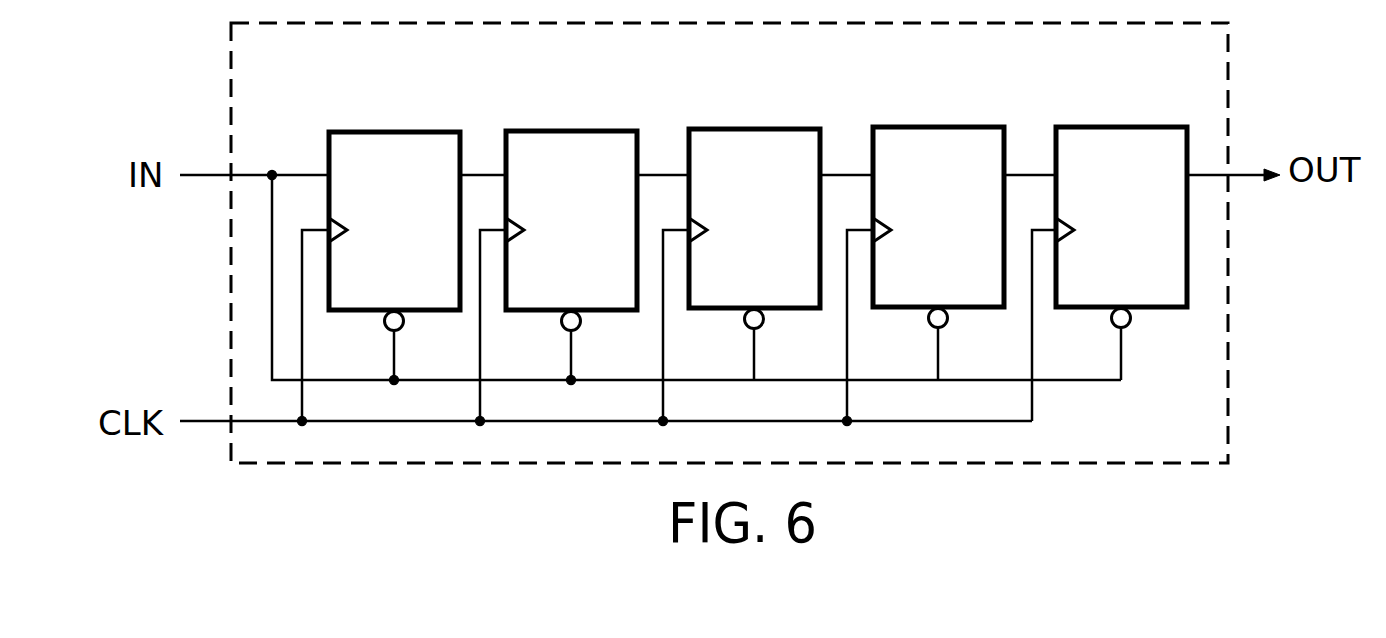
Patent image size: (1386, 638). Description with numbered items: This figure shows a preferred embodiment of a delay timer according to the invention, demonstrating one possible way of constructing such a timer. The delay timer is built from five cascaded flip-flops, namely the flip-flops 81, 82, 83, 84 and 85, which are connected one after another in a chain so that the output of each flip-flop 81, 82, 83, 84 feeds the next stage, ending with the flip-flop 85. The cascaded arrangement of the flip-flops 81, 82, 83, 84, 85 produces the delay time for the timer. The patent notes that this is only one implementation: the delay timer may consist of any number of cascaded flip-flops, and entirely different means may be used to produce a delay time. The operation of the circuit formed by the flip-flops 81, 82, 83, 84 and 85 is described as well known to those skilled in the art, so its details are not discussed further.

The flip-flop 81 is at (400, 124).
The flip-flop 82 is at (589, 123).
The flip-flop 83 is at (772, 121).
The flip-flop 84 is at (953, 119).
The flip-flop 85 is at (1132, 119).